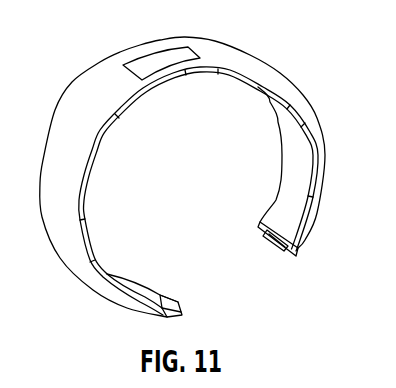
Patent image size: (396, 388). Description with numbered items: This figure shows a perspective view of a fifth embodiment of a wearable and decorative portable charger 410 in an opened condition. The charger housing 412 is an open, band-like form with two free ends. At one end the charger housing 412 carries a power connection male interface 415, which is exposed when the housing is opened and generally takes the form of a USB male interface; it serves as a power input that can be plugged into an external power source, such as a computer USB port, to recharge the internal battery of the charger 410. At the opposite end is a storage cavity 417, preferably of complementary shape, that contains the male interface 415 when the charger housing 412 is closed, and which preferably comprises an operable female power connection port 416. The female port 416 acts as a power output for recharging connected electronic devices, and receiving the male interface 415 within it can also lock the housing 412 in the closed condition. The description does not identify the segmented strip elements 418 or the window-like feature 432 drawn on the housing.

The charger 410 is at (308, 70).
The charger housing 412 is at (96, 80).
The power connection male interface 415 is at (186, 312).
The power connection port 416 is at (285, 250).
The storage cavity 417 is at (256, 240).
The electrode strip segments 418 is at (112, 128).
The window 432 is at (140, 58).